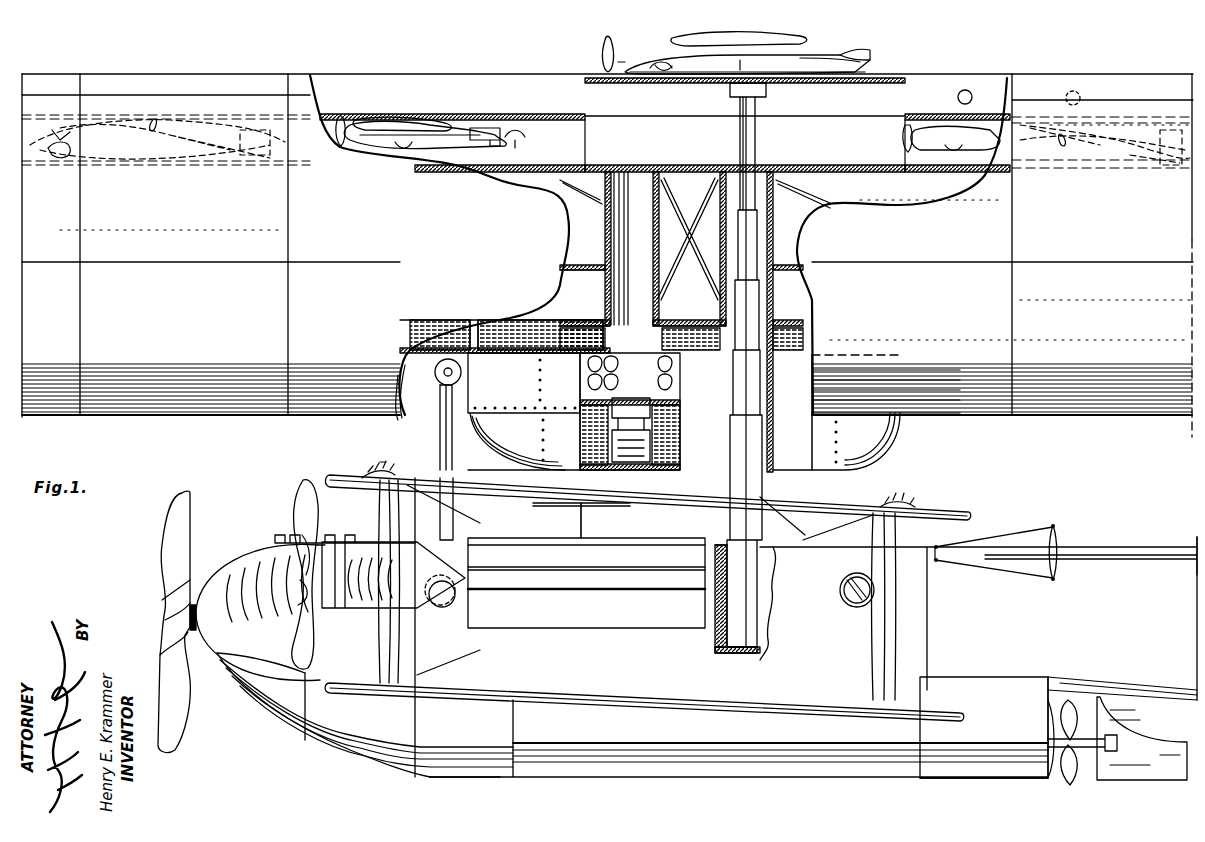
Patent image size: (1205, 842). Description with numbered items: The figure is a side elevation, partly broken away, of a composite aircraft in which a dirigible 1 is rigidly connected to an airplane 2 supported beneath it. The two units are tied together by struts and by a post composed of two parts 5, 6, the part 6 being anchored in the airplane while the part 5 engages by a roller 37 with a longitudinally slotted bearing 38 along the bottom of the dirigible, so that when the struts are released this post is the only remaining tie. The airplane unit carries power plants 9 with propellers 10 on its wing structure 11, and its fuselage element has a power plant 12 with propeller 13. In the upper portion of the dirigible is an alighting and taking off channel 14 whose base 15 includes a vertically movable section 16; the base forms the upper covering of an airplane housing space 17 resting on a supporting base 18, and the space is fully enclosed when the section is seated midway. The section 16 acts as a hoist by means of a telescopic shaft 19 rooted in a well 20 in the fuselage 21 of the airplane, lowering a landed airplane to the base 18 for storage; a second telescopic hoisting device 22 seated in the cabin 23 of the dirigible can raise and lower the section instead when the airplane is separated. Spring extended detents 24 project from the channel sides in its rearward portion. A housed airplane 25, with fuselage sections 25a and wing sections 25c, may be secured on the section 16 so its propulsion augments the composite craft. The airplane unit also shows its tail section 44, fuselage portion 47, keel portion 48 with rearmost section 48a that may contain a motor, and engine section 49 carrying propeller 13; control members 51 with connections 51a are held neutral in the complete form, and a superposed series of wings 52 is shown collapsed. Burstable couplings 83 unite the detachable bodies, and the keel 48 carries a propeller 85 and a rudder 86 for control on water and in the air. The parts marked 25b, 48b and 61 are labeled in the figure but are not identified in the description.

The dirigible 1 is at (1150, 415).
The airplane 2 is at (806, 628).
The post part 5 is at (440, 425).
The post part 6 is at (440, 455).
The power plants 9 is at (350, 545).
The propellers 10 is at (300, 500).
The wing structure 11 is at (395, 520).
The power plant 12 is at (282, 535).
The propeller 13 is at (190, 550).
The airplane alighting and taking off channel 14 is at (432, 114).
The base of channel 15 is at (482, 116).
The vertically movable section 16 is at (895, 80).
The airplane housing space 17 is at (745, 142).
The supporting base 18 is at (812, 170).
The telescopic shaft 19 is at (756, 170).
The well 20 is at (770, 593).
The fuselage 21 is at (621, 655).
The telescopic hoisting device 22 is at (630, 411).
The cabin 23 is at (524, 411).
The spring extended detents 24 is at (958, 97).
The airplane 25 is at (98, 155).
The fuselage sections 25a is at (805, 58).
The airplane landing gear 25b is at (505, 130).
The wing sections 25c is at (748, 38).
The roller 37 is at (436, 366).
The longitudinally slotted bearing 38 is at (398, 420).
The tail section 44 is at (1037, 577).
The fuselage portion 47 is at (648, 598).
The keel portion 48 is at (438, 727).
The rearmost keel section 48a is at (984, 727).
The keel 48b is at (420, 780).
The engine section 49 is at (272, 612).
The control members 51 is at (1085, 555).
The connections 51a is at (1056, 525).
The wings 52 is at (586, 583).
The sight 61 is at (581, 520).
The burstable coupling 83 is at (372, 468).
The propeller 85 is at (1068, 785).
The rudder 86 is at (1150, 730).